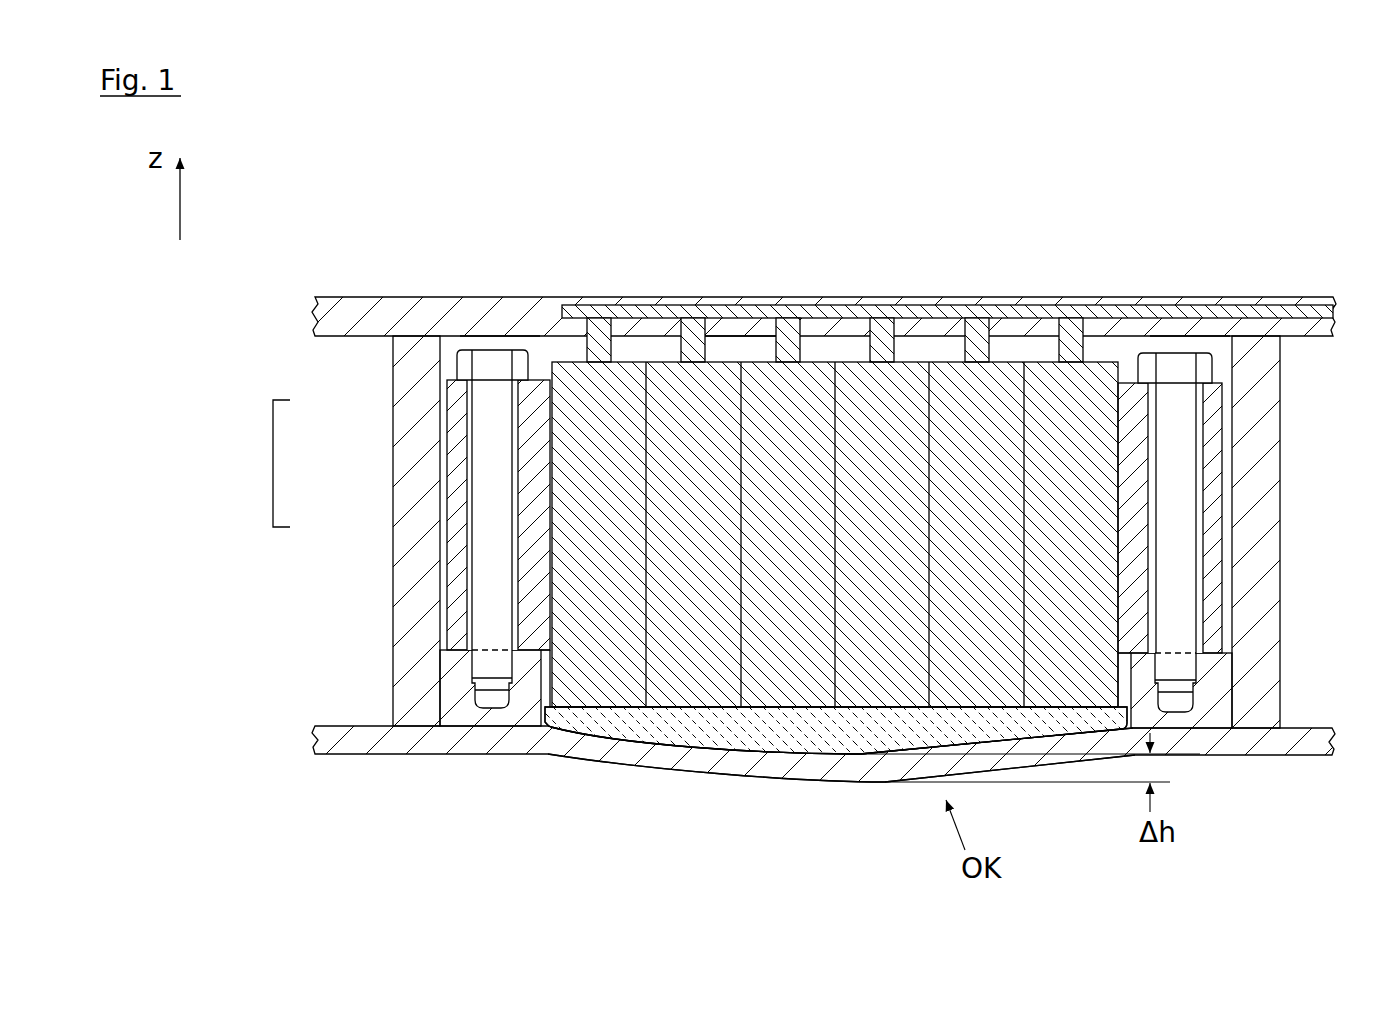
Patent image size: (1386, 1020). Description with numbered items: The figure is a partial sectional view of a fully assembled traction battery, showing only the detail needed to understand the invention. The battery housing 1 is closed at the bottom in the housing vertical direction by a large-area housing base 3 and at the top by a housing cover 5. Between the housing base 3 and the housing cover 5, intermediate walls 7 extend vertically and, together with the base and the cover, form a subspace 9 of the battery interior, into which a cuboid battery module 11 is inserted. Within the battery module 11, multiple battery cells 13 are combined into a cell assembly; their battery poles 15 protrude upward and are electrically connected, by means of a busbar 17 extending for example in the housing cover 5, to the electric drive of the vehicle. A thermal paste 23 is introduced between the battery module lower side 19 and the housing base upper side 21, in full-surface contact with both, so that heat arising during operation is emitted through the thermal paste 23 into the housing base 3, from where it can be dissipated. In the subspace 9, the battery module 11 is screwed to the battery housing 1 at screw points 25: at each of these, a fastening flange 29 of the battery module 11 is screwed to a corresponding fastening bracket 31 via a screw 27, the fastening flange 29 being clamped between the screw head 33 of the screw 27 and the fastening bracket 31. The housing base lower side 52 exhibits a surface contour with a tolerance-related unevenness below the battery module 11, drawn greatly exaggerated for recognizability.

The battery housing 1 is at (273, 441).
The housing base 3 is at (350, 726).
The housing cover 5 is at (345, 336).
The intermediate walls 7 is at (393, 465).
The subspace 9 is at (722, 350).
The battery module 11 is at (915, 361).
The battery cells 13 is at (678, 380).
The battery poles 15 is at (788, 340).
The busbar 17 is at (1128, 310).
The battery module lower side 19 is at (807, 708).
The housing base upper side 21 is at (650, 743).
The thermal paste 23 is at (715, 730).
The screw points 25 is at (485, 334).
The screw 27 is at (488, 423).
The fastening flange 29 is at (537, 633).
The fastening bracket 31 is at (465, 715).
The screw head 33 is at (500, 360).
The housing base lower side 52 is at (777, 757).